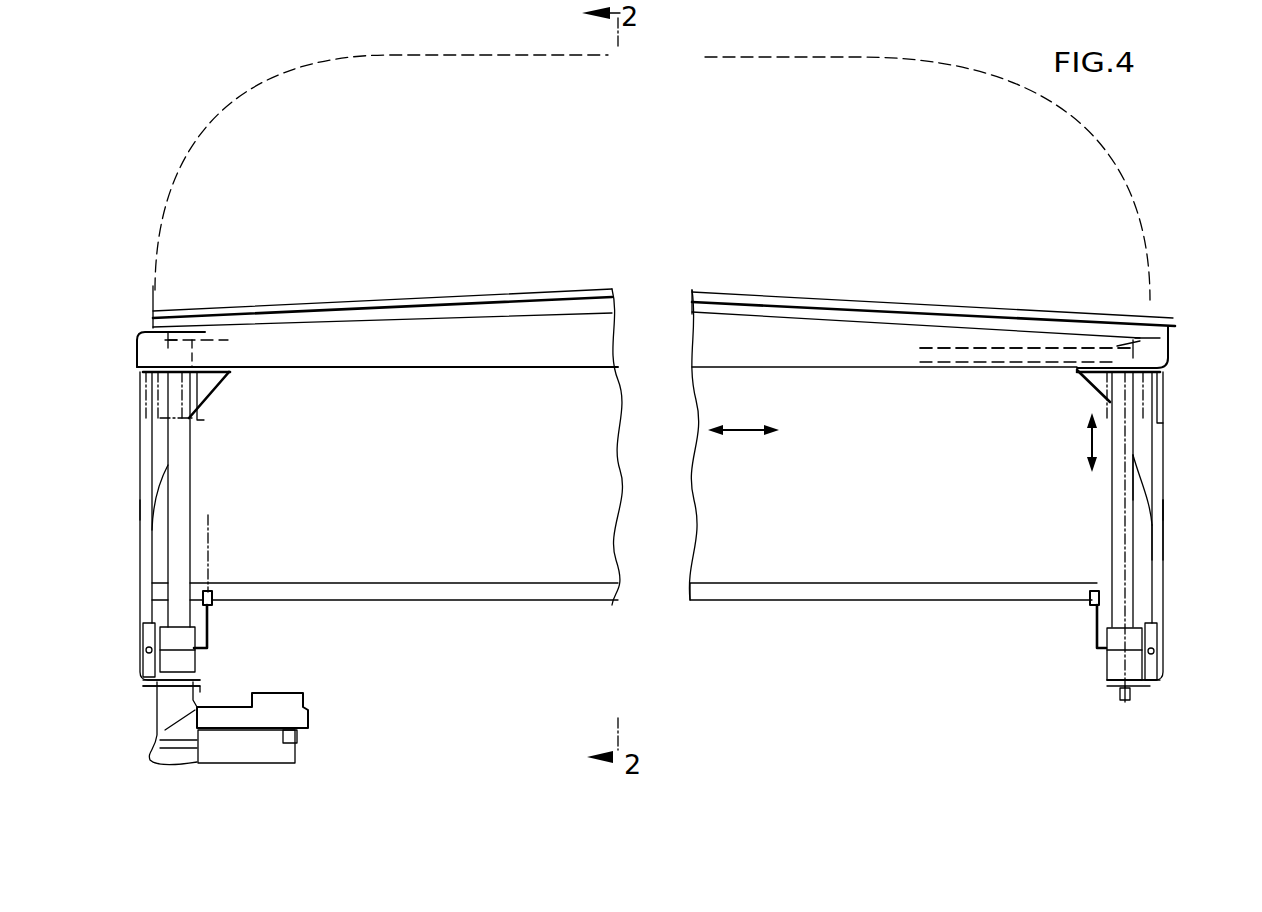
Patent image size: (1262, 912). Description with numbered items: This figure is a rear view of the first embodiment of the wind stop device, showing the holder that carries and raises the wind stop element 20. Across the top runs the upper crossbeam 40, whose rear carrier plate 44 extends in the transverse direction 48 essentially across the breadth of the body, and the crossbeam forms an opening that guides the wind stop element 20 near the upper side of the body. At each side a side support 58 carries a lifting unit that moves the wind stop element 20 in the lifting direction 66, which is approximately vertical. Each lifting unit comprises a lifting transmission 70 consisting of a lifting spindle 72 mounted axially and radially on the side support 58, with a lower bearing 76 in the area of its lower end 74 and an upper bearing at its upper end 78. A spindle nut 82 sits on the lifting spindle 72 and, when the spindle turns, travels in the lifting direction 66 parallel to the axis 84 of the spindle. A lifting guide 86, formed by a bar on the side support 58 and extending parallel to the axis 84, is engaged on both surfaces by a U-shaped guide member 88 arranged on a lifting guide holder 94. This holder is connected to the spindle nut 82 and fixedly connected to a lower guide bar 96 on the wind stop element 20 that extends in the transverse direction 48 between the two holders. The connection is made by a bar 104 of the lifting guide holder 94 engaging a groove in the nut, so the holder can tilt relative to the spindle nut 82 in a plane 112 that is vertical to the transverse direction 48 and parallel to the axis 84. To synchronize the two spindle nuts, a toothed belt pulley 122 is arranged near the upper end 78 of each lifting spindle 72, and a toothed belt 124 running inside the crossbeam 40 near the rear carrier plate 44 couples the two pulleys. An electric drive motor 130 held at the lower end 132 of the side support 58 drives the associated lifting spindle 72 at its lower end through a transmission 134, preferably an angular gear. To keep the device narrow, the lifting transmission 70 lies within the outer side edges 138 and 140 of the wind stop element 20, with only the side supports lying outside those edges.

The wind stop element 20 is at (722, 535).
The upper crossbeam 40 is at (835, 288).
The rear carrier plate 44 is at (783, 347).
The transverse direction 48 is at (744, 428).
The side support 58 is at (140, 540).
The lifting direction 66 is at (1092, 445).
The lifting transmission 70 is at (205, 493).
The lifting spindle 72 is at (1120, 547).
The lower end 74 is at (1130, 700).
The lower bearing 76 is at (1137, 690).
The upper end 78 is at (193, 700).
The spindle nut 82 is at (1115, 667).
The axis 84 is at (1123, 507).
The lifting guide 86 is at (1153, 558).
The guide member 88 is at (1152, 667).
The lifting guide holder 94 is at (1082, 621).
The lower guide bar 96 is at (795, 590).
The bar 104 is at (1115, 662).
The plane 112 is at (210, 542).
The toothed belt pulley 122 is at (177, 353).
The toothed belt 124 is at (983, 350).
The electric drive motor 130 is at (262, 748).
The lower end 132 is at (145, 682).
The transmission 134 is at (178, 738).
The outer side edge 138 is at (1150, 278).
The outer side edge 140 is at (155, 288).